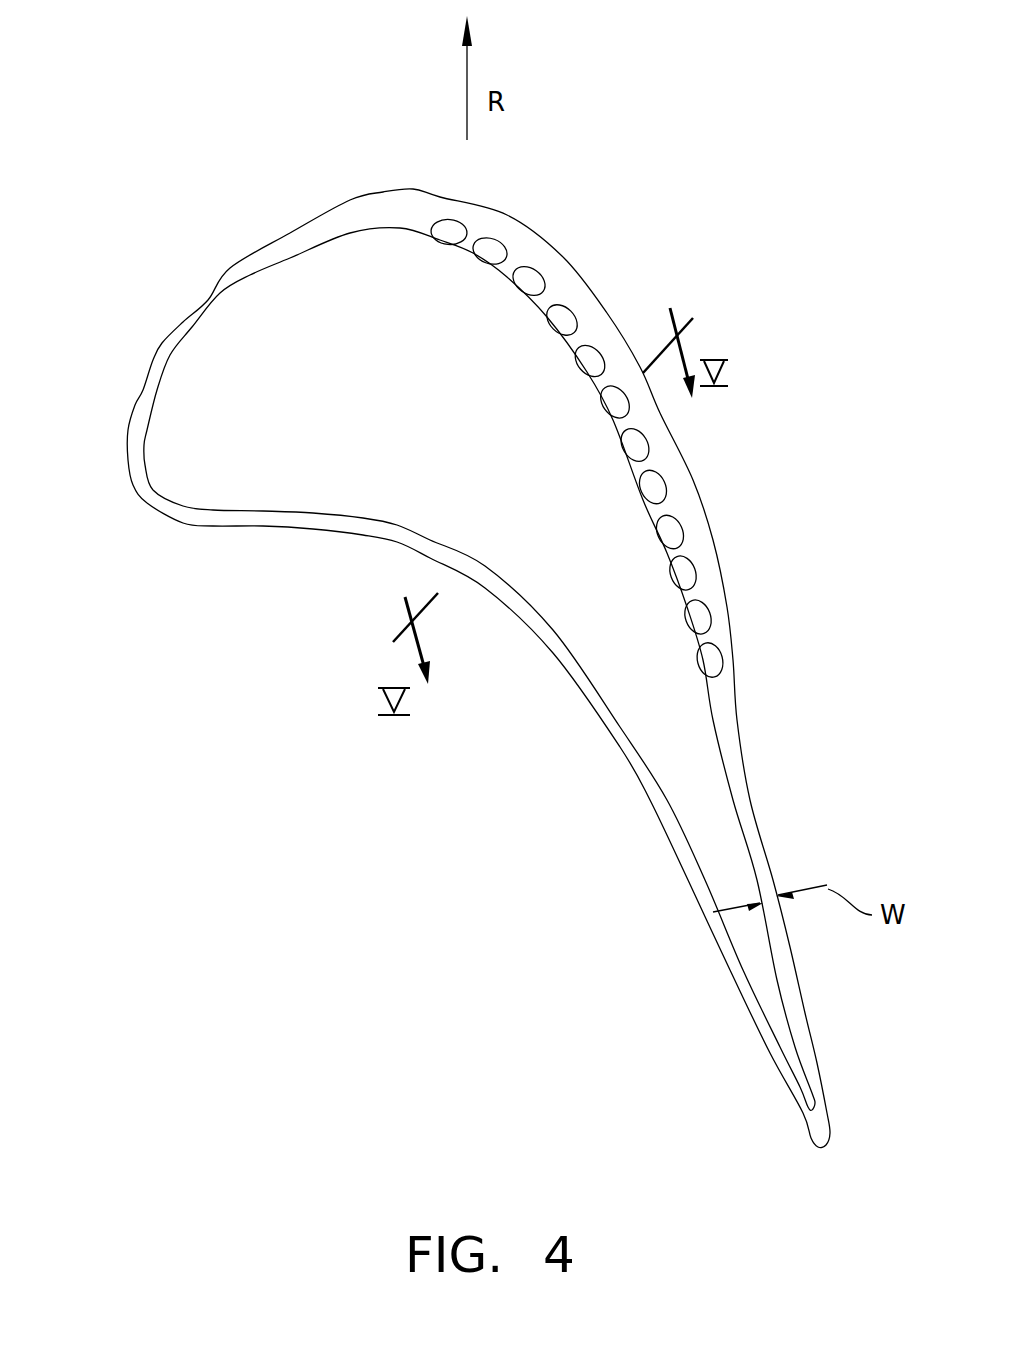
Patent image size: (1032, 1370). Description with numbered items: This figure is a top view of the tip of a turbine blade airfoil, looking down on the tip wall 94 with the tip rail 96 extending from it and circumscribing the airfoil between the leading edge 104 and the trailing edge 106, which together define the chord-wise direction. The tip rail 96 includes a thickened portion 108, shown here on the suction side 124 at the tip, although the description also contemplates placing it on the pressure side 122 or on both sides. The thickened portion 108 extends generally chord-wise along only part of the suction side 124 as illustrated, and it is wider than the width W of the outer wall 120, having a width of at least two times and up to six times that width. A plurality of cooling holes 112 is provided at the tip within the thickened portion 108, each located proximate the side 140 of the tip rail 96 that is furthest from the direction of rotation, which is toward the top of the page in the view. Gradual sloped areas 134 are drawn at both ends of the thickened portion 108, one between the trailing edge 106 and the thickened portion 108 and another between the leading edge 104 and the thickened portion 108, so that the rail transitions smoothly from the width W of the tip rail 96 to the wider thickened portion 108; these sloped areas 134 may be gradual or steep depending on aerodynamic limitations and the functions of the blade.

The tip wall 94 is at (330, 387).
The tip rail 96 is at (410, 203).
The leading edge 104 is at (146, 507).
The trailing edge 106 is at (817, 1149).
The thickened portion 108 is at (650, 413).
The cooling holes 112 is at (490, 257).
The outer wall 120 is at (607, 310).
The pressure side 122 is at (570, 670).
The suction side 124 is at (715, 538).
The gradual sloped area 134 is at (160, 343).
The side of the tip rail 140 is at (563, 352).